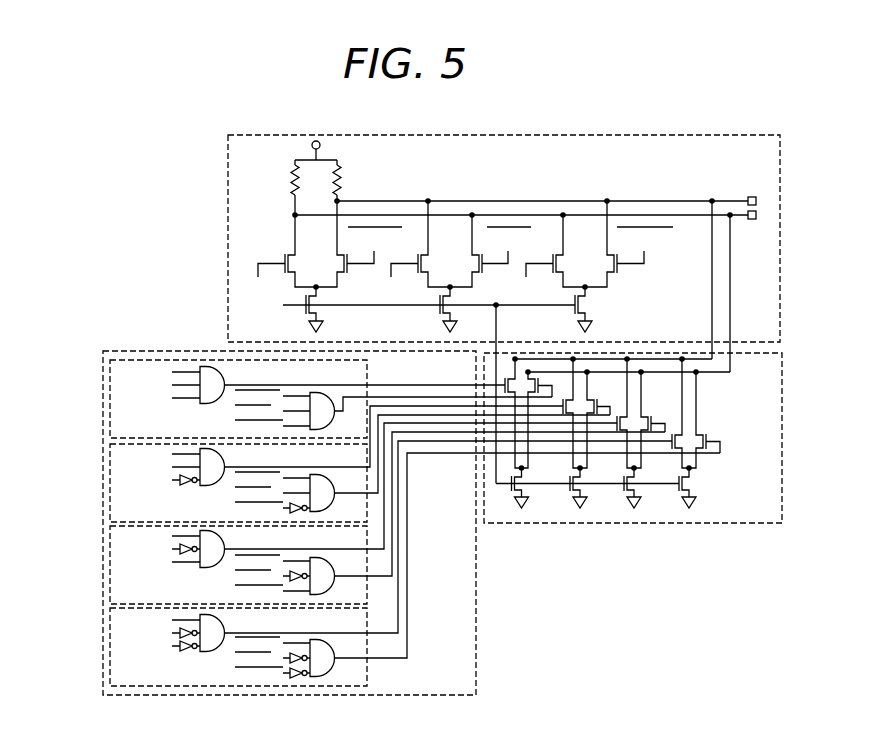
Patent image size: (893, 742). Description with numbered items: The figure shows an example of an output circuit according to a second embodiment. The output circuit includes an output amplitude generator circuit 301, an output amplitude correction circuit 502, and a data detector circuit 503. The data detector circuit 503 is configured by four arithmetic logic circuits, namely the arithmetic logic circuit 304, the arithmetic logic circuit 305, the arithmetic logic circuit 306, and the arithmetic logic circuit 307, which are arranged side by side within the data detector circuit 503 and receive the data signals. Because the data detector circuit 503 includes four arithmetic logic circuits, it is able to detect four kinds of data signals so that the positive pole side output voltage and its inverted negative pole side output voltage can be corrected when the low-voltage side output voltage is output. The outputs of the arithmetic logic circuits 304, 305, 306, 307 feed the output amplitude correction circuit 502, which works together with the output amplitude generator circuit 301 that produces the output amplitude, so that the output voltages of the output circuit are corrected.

The output amplitude generator circuit 301 is at (702, 135).
The output amplitude correction circuit 502 is at (629, 524).
The data detector circuit 503 is at (188, 351).
The arithmetic logic circuit 304 is at (110, 388).
The arithmetic logic circuit 305 is at (110, 470).
The arithmetic logic circuit 306 is at (110, 552).
The arithmetic logic circuit 307 is at (110, 636).